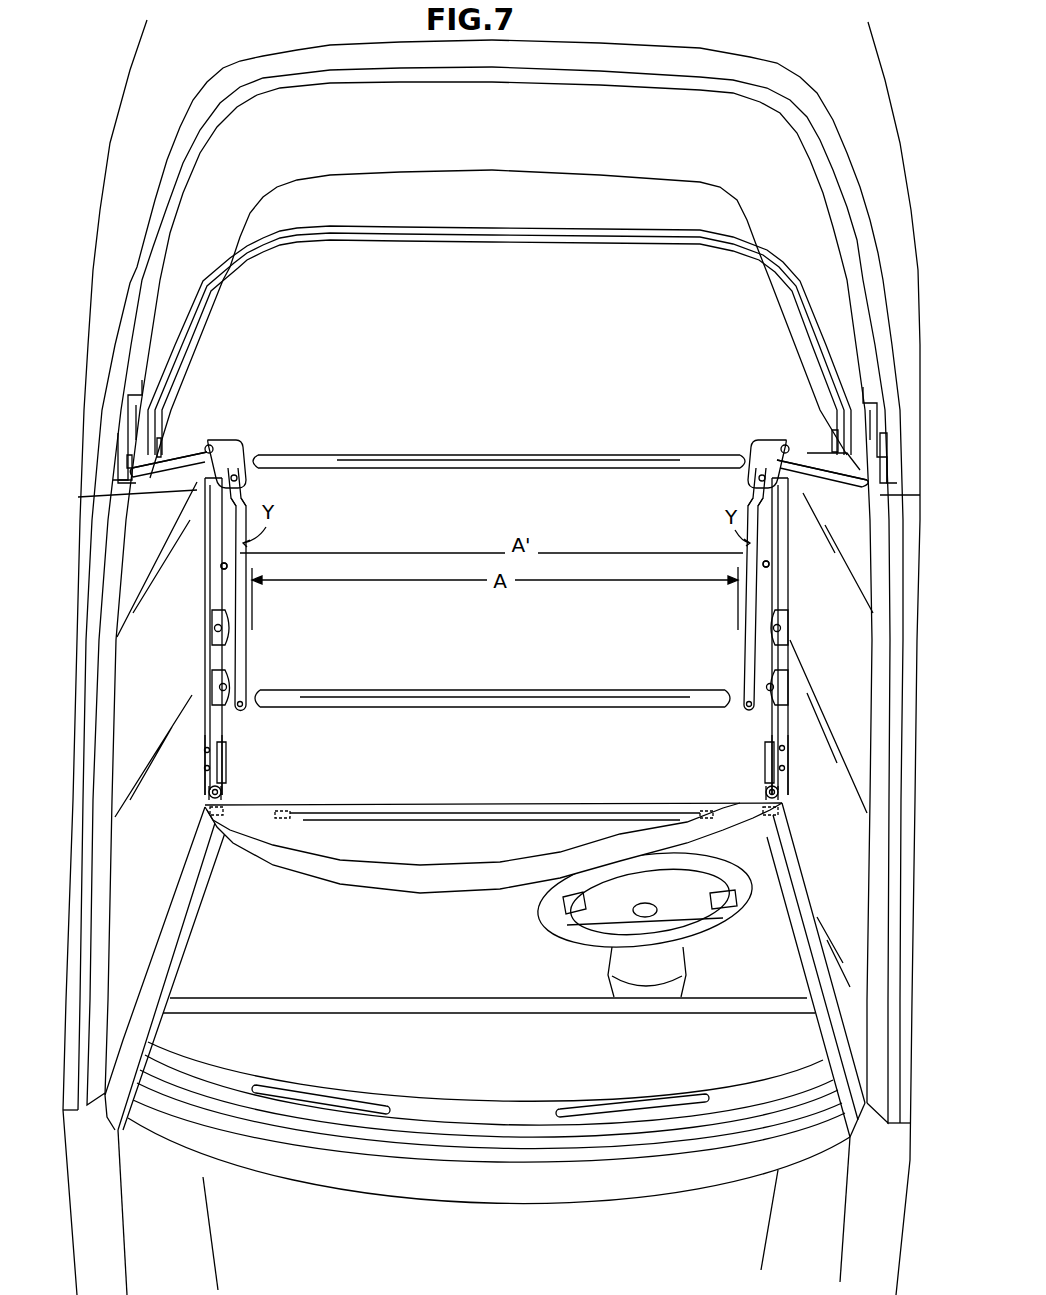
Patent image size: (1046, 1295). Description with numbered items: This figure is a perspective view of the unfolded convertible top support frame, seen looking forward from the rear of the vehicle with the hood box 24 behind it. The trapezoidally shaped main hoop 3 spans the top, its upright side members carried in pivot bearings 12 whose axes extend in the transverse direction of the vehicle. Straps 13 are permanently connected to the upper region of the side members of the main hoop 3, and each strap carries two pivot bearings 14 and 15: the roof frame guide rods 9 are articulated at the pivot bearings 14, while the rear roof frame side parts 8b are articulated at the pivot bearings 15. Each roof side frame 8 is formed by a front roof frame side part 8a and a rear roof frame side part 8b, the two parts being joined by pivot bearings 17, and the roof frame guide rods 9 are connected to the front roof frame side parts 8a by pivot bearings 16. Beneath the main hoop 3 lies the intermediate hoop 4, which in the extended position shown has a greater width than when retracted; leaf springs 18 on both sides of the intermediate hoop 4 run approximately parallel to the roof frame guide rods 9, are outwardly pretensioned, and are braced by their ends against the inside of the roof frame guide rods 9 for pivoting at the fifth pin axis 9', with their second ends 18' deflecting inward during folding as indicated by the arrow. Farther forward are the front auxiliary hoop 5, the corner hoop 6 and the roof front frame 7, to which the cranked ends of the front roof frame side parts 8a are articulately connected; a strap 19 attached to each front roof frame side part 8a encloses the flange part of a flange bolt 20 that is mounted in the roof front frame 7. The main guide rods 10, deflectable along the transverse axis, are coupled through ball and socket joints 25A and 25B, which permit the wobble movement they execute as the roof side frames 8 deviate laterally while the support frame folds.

The main hoop 3 is at (580, 453).
The intermediate hoop 4 is at (496, 690).
The front auxiliary hoop 5 is at (441, 805).
The corner hoop 6 is at (548, 242).
The roof front frame 7 is at (373, 868).
The roof side frames 8 is at (200, 650).
The front roof frame side part 8a is at (206, 736).
The rear roof frame side part 8b is at (211, 562).
The roof frame guide rods 9 is at (497, 589).
The fifth pin axis 9' is at (495, 591).
The main guide rods 10 is at (160, 458).
The pivot bearings 12 is at (100, 483).
The straps 13 is at (213, 438).
The pivot bearings 14 is at (238, 462).
The pivot bearings 15 is at (236, 441).
The pivot bearings 16 is at (219, 688).
The pivot bearings 17 is at (214, 628).
The leaf springs 18 is at (495, 672).
The second ends of the leaf springs 18' is at (498, 531).
The strap 19 is at (227, 762).
The flange bolt 20 is at (230, 793).
The hood box 24 is at (524, 147).
The ball and socket joint 25A is at (203, 480).
The ball and socket joint 25B is at (499, 466).